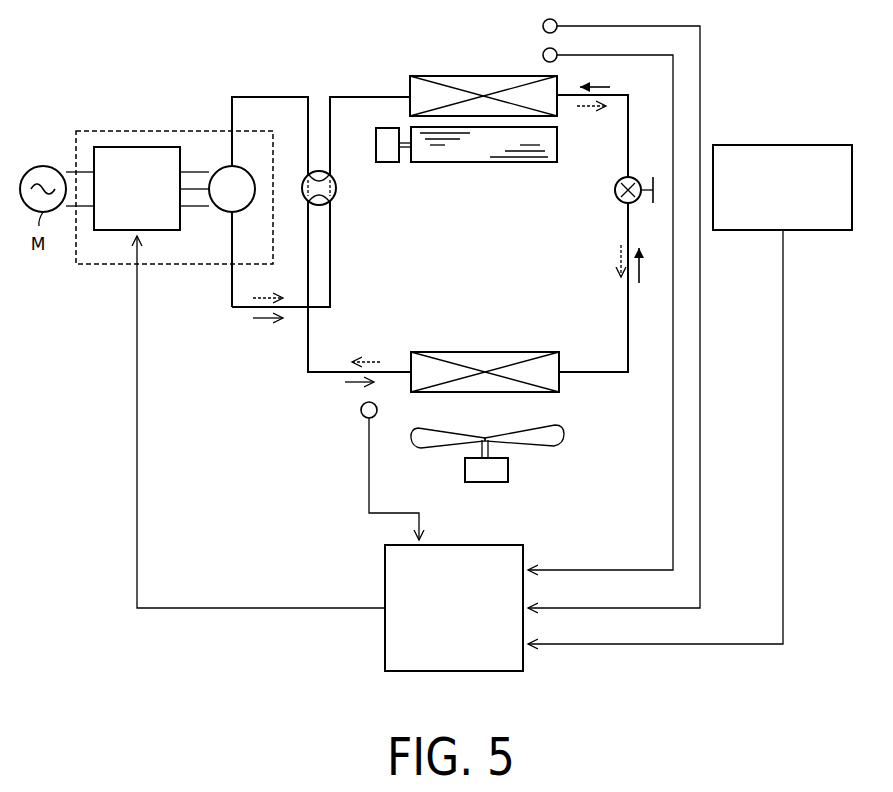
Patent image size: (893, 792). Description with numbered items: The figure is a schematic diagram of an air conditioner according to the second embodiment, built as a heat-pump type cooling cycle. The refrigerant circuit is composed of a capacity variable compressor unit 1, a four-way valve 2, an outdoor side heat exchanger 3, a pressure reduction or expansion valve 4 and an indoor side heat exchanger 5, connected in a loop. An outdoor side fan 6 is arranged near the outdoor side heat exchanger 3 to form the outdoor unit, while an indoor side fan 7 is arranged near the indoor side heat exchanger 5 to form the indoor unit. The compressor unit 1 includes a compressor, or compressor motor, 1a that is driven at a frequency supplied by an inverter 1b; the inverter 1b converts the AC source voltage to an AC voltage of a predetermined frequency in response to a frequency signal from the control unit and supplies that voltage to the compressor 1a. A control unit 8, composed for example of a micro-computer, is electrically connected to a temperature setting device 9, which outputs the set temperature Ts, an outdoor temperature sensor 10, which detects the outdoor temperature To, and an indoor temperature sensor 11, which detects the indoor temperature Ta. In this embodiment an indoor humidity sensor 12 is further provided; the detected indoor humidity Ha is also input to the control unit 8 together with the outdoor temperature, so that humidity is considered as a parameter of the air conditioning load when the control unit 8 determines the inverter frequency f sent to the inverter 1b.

The capacity variable compressor unit 1 is at (100, 270).
The compressor 1a is at (224, 212).
The inverter 1b is at (126, 147).
The four-way valve 2 is at (337, 188).
The outdoor side heat exchanger 3 is at (440, 352).
The expansion valve 4 is at (615, 190).
The indoor side heat exchanger 5 is at (438, 76).
The outdoor side fan 6 is at (478, 437).
The indoor side fan 7 is at (440, 165).
The control unit 8 is at (445, 671).
The temperature setting device 9 is at (779, 145).
The outdoor temperature sensor 10 is at (361, 410).
The indoor temperature sensor 11 is at (542, 55).
The indoor humidity sensor 12 is at (542, 26).